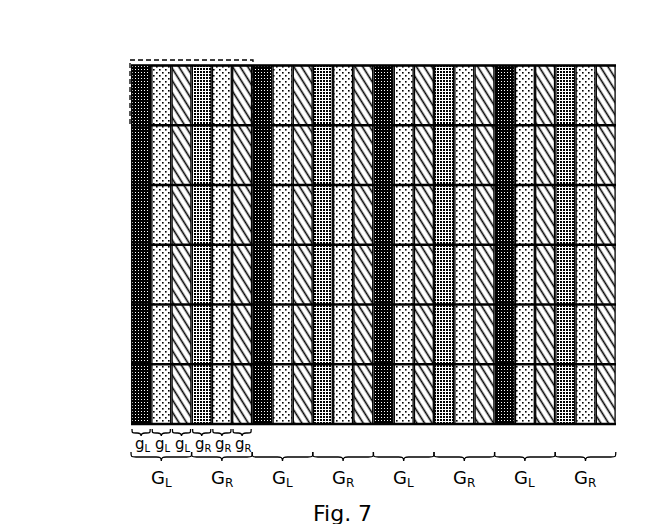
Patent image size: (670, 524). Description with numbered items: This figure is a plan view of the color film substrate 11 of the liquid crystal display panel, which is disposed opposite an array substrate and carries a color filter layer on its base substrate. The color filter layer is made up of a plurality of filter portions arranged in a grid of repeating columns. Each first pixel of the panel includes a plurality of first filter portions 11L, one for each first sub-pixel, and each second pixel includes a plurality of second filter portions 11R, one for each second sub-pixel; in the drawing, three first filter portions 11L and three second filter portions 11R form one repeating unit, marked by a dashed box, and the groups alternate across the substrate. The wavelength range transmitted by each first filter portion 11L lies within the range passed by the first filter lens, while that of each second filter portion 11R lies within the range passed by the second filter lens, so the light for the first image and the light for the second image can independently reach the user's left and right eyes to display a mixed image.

The color film substrate 11 is at (608, 40).
The first filter portion 11L is at (182, 86).
The second filter portion 11R is at (228, 110).